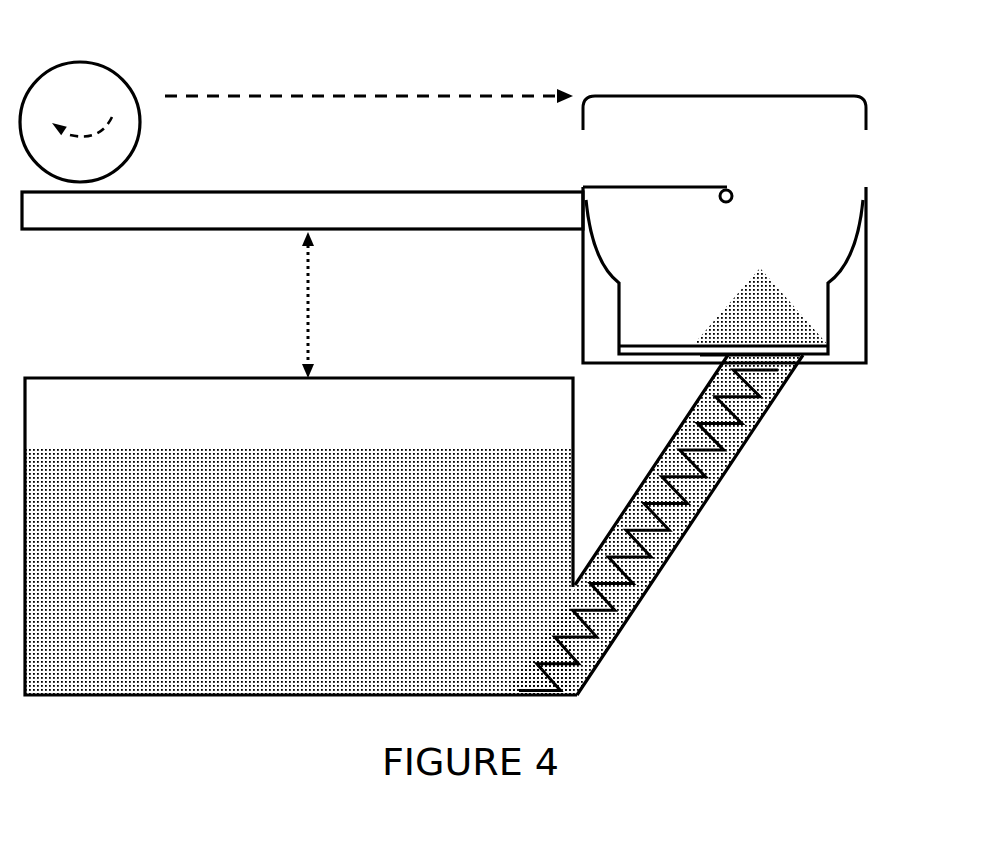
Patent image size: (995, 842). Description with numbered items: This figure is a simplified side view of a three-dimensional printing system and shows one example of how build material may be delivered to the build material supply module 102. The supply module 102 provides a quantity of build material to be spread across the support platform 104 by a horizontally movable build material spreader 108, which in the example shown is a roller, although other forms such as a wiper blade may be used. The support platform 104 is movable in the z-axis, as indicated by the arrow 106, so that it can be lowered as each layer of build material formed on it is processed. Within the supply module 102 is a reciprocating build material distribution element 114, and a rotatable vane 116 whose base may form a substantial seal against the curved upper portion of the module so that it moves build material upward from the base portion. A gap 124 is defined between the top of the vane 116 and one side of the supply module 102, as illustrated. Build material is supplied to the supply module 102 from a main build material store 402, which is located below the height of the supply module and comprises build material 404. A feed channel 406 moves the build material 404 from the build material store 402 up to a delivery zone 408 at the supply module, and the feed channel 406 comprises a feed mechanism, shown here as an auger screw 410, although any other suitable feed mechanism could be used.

The build material supply module 102 is at (715, 96).
The support platform 104 is at (237, 192).
The arrow 106 is at (310, 270).
The build material spreader 108 is at (97, 63).
The build material distribution element 114 is at (698, 355).
The vane 116 is at (698, 187).
The gap 124 is at (822, 185).
The main build material store 402 is at (97, 378).
The build material 404 is at (168, 660).
The feed channel 406 is at (713, 480).
The delivery zone 408 is at (780, 327).
The auger screw 410 is at (638, 592).